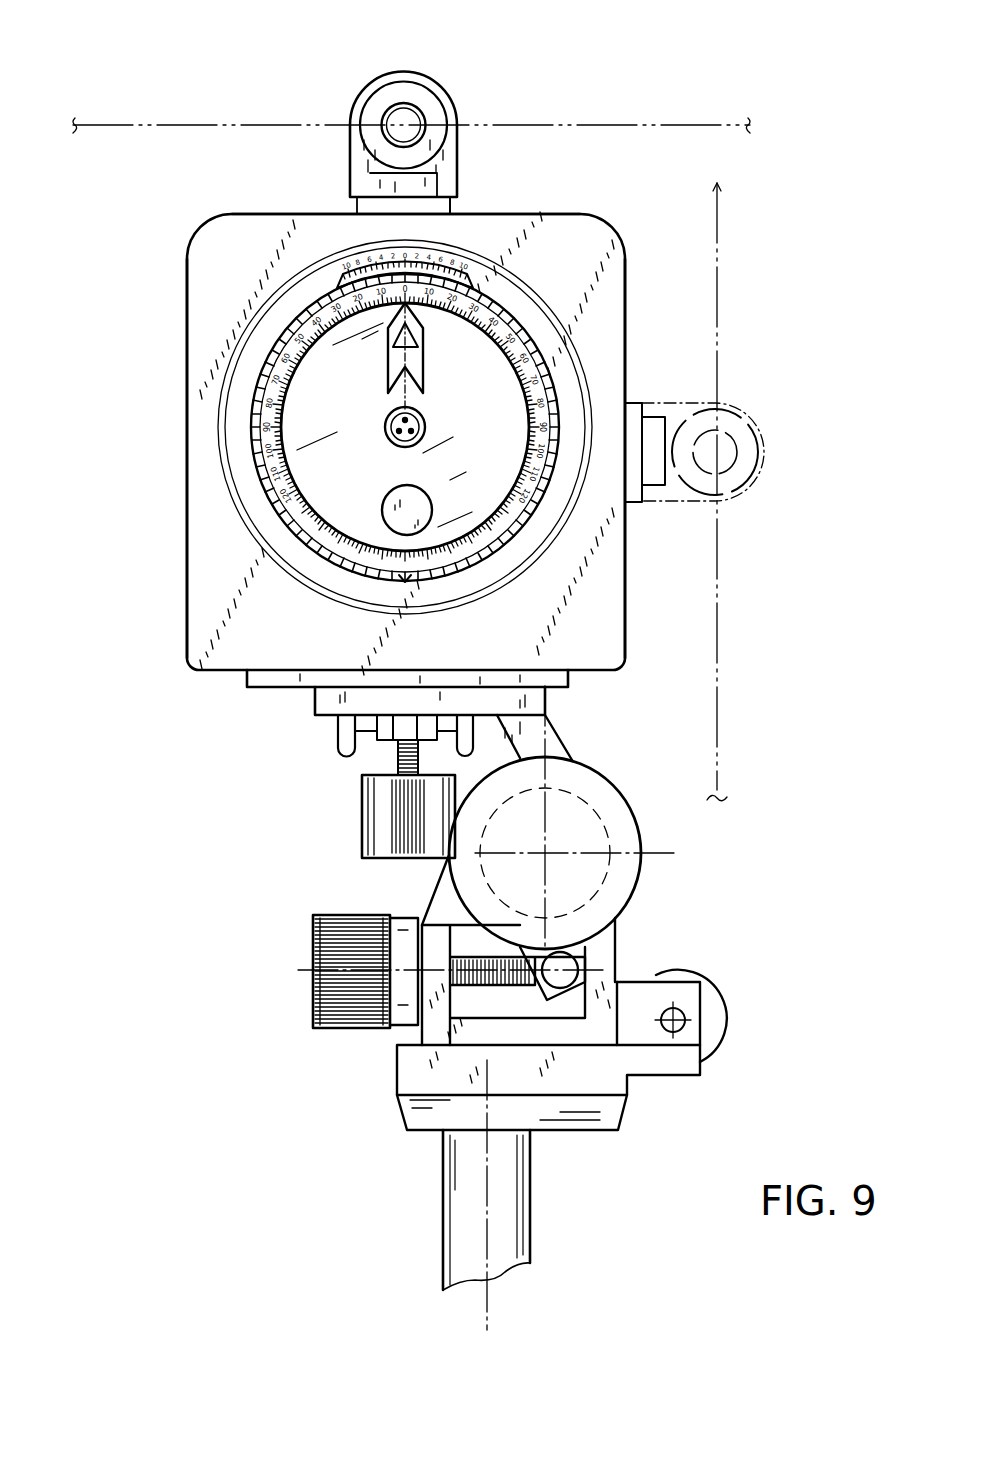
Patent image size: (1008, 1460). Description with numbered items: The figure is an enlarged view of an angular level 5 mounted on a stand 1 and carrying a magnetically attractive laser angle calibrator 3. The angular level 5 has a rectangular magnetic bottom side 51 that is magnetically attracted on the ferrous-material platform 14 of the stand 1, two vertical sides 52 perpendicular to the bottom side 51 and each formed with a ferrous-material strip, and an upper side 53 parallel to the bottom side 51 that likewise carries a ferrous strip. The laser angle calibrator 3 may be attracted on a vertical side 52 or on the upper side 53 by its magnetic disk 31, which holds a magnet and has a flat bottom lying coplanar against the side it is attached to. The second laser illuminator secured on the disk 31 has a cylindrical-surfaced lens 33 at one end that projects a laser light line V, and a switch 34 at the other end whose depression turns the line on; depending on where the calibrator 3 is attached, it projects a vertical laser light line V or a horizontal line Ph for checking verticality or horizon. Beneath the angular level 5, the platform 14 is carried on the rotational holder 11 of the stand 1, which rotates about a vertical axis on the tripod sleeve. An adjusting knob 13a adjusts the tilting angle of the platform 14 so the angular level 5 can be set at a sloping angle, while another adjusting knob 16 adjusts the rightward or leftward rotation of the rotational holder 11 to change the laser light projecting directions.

The stand 1 is at (529, 1192).
The magnetically attractive laser angle calibrator 3 is at (443, 78).
The angular level 5 is at (187, 360).
The rotational holder 11 is at (627, 1098).
The adjusting knob 13a is at (318, 960).
The platform 14 is at (250, 687).
The adjusting knob 16 is at (716, 996).
The magnetic disk 31 is at (457, 208).
The cylindrical-surfaced lens 33 is at (412, 124).
The switch 34 is at (402, 118).
The magnetic bottom side 51 is at (597, 672).
The vertical side 52 is at (187, 527).
The upper side 53 is at (537, 213).
The horizontal line Ph is at (615, 122).
The laser light line V is at (720, 223).